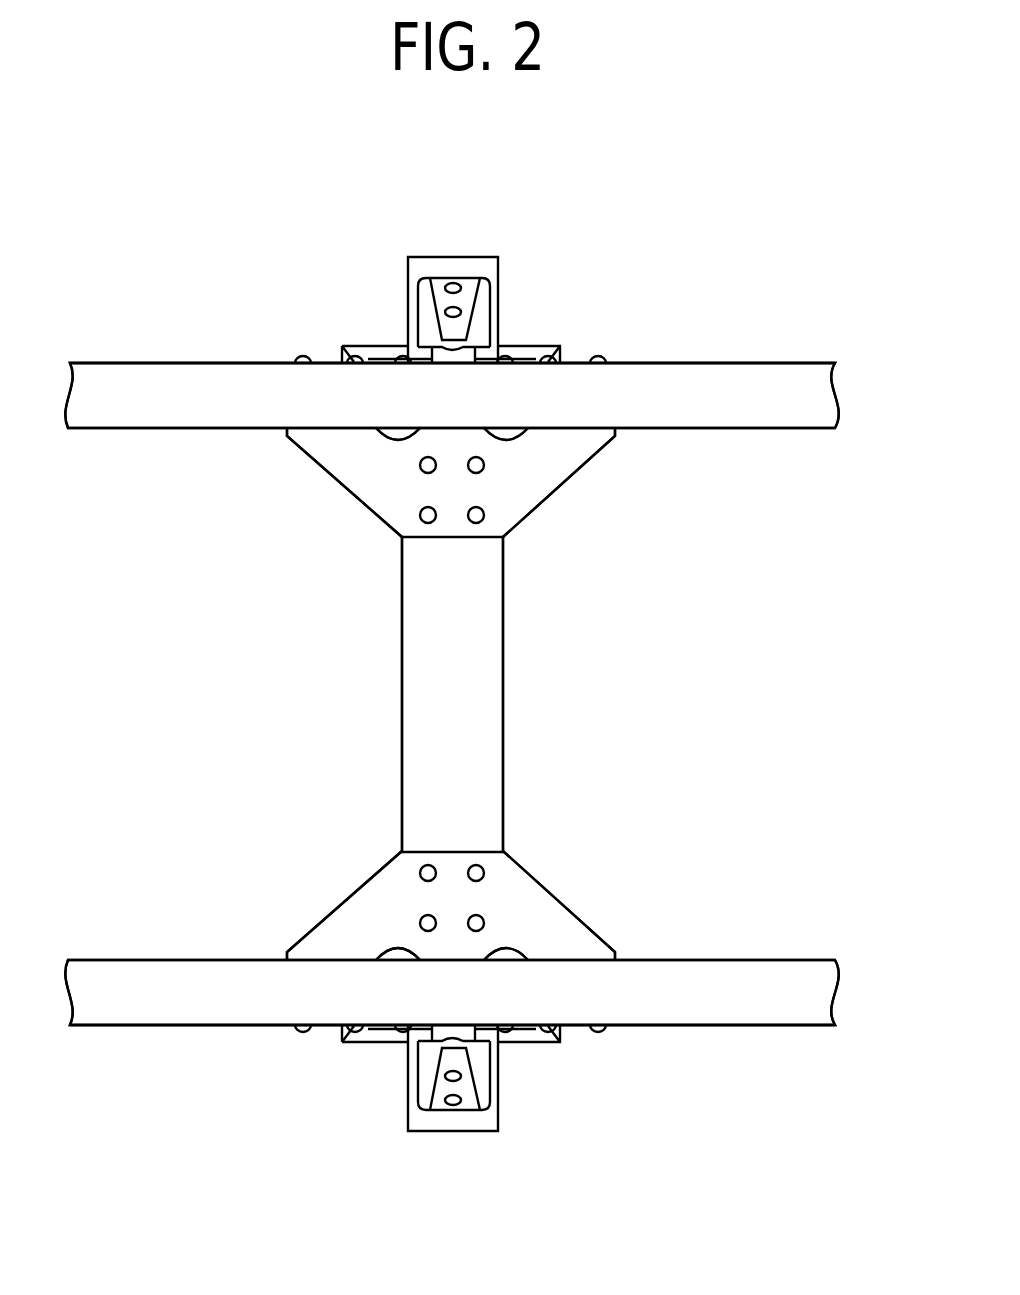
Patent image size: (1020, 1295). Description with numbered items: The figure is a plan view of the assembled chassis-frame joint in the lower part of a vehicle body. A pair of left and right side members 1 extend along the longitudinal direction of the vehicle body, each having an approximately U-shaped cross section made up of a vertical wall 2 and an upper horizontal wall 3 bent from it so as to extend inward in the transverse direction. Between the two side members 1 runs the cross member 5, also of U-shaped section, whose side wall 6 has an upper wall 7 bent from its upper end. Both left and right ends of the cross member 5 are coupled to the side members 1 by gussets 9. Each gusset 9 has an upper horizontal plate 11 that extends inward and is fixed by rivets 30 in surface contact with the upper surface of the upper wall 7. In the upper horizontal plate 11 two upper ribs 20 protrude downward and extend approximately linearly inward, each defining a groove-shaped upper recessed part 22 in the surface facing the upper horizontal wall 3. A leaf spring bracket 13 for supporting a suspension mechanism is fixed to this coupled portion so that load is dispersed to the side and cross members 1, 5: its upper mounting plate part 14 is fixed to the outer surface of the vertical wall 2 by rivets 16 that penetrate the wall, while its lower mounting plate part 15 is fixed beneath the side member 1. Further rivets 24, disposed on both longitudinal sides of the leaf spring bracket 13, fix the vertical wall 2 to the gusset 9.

The side member 1 is at (479, 693).
The vertical wall 2 is at (452, 694).
The upper horizontal wall 3 is at (476, 694).
The cross member 5 is at (520, 694).
The side wall 6 is at (401, 682).
The upper wall 7 is at (482, 722).
The gusset 9 is at (474, 694).
The upper horizontal plate 11 is at (427, 694).
The leaf spring bracket 13 is at (458, 244).
The upper mounting plate part 14 is at (433, 694).
The lower mounting plate part 15 is at (489, 697).
The rivet 16 is at (451, 696).
The upper rib 20 is at (450, 692).
The upper recessed part 22 is at (449, 694).
The rivet 24 is at (451, 695).
The rivet 30 is at (450, 694).